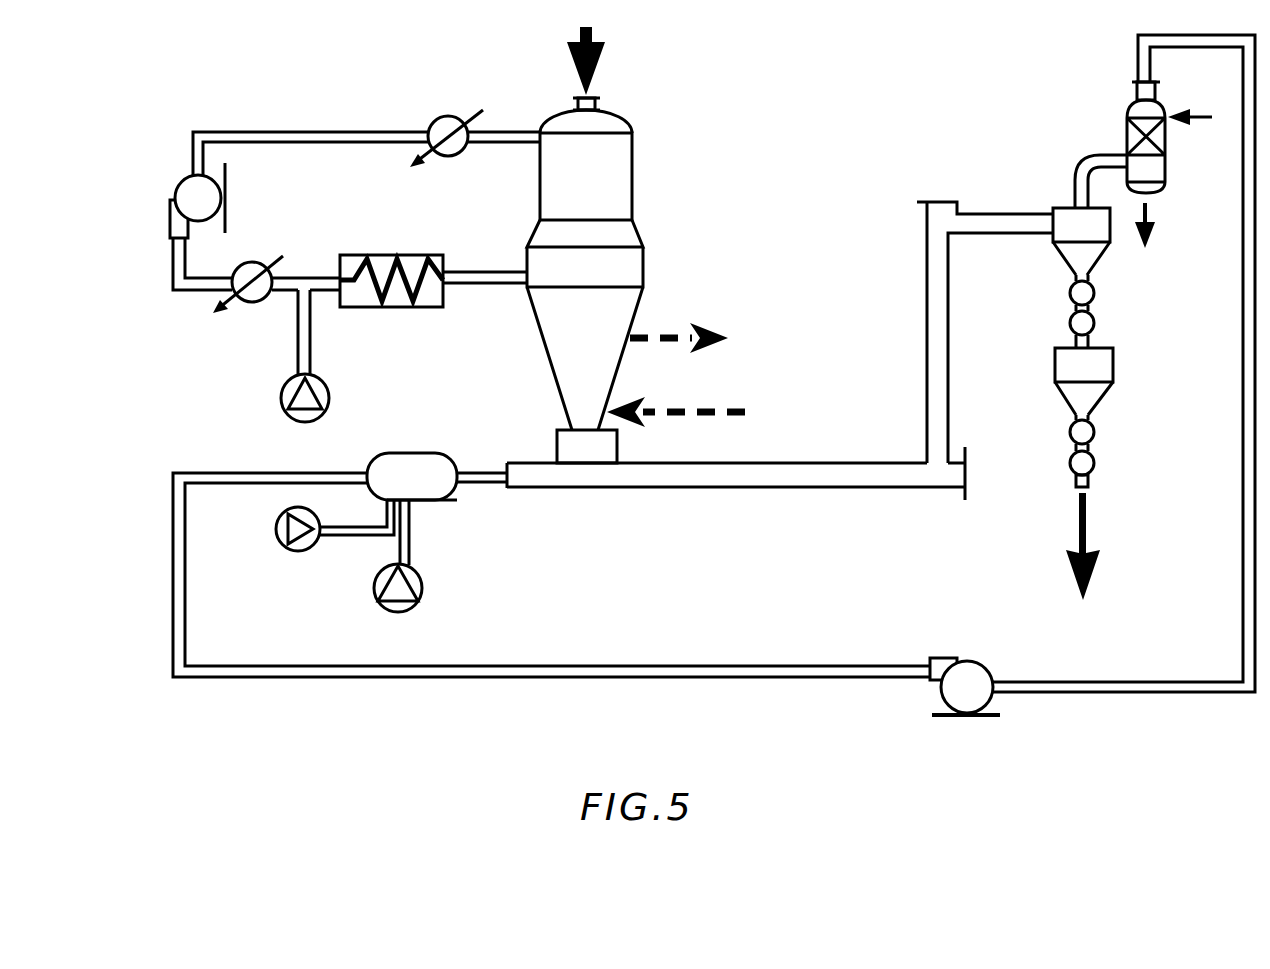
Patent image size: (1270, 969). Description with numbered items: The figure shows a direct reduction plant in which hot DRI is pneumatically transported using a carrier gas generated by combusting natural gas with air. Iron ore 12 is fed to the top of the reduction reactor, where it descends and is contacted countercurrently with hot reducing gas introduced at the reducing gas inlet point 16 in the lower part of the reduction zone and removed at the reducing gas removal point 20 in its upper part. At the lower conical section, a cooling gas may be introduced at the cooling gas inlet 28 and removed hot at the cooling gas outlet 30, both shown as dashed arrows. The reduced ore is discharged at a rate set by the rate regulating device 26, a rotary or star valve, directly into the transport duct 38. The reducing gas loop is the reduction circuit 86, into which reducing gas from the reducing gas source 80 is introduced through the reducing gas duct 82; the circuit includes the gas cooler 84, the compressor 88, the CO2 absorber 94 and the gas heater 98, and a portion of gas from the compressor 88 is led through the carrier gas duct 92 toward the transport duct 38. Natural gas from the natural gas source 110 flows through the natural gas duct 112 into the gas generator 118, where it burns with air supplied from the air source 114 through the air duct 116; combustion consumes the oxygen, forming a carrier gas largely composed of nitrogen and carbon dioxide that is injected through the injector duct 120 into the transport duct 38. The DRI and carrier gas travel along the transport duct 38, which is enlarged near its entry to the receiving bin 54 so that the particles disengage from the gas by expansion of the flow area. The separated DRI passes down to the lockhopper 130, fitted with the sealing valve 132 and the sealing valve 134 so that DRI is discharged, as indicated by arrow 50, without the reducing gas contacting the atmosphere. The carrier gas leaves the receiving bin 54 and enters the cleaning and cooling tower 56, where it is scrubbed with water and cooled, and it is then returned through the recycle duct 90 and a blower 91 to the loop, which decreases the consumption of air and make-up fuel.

The iron ore 12 is at (570, 63).
The reducing gas inlet point 16 is at (500, 267).
The reducing gas removal point 20 is at (517, 130).
The rate regulating device 26 is at (557, 432).
The cooling gas inlet 28 is at (683, 412).
The cooling gas outlet 30 is at (673, 332).
The transport duct 38 is at (862, 463).
The product discharge arrow 50 is at (1077, 553).
The receiving bin 54 is at (1063, 207).
The cleaning and cooling tower 56 is at (1167, 163).
The reducing gas source 80 is at (283, 400).
The reducing gas duct 82 is at (312, 362).
The gas cooler 84 is at (443, 113).
The reduction circuit 86 is at (306, 124).
The compressor 88 is at (172, 193).
The recycle duct 90 is at (1242, 417).
The recycle pump / blower 91 is at (965, 660).
The carrier gas duct 92 is at (320, 472).
The CO2 absorber 94 is at (250, 260).
The gas heater 98 is at (397, 257).
The natural gas source 110 is at (427, 588).
The natural gas duct 112 is at (408, 543).
The air source 114 is at (287, 548).
The air duct 116 is at (352, 537).
The gas generator 118 is at (443, 498).
The injector duct 120 is at (485, 473).
The lockhopper 130 is at (1080, 390).
The sealing valve 132 is at (1070, 317).
The sealing valve 134 is at (1078, 453).